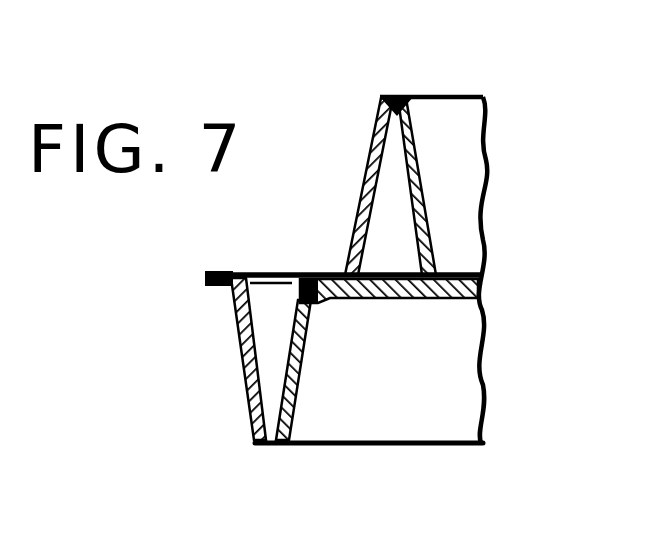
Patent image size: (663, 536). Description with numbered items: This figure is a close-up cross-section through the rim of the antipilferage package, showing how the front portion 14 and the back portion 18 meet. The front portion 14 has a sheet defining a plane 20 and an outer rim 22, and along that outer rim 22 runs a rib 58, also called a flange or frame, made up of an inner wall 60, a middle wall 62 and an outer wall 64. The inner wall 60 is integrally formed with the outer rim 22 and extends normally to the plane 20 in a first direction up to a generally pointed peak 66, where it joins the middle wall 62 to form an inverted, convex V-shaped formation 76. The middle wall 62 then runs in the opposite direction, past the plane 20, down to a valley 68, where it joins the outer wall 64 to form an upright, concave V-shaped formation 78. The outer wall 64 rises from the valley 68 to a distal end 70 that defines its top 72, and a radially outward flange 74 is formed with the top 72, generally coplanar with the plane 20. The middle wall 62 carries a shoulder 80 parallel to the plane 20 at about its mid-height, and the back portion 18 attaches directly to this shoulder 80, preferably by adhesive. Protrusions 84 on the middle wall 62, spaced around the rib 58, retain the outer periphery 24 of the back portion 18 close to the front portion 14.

The front portion 14 is at (437, 407).
The back portion 18 is at (448, 300).
The plane 20 is at (478, 292).
The outer rim 22 is at (450, 272).
The outer periphery 24 is at (343, 300).
The rib 58 is at (172, 337).
The inner wall 60 is at (416, 146).
The middle wall 62 is at (375, 130).
The outer wall 64 is at (240, 402).
The peak 66 is at (392, 97).
The valley 68 is at (272, 448).
The distal end 70 is at (262, 270).
The top 72 is at (233, 270).
The flange 74 is at (205, 272).
The inverted V-shaped formation 76 is at (425, 182).
The upright V-shaped formation 78 is at (303, 380).
The shoulder 80 is at (330, 242).
The protrusions 84 is at (312, 315).